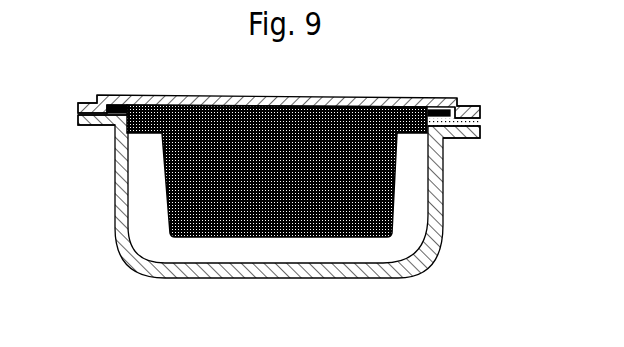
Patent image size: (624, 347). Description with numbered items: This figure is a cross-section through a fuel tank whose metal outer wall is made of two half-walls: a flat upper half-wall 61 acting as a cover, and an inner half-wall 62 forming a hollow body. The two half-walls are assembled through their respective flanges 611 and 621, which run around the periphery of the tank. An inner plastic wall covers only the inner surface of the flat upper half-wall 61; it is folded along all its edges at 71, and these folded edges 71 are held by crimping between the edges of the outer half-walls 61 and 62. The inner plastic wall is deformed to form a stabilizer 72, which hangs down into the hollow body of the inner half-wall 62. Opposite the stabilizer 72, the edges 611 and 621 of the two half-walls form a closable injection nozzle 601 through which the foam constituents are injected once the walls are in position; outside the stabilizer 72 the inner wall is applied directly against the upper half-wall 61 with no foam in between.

The upper half-wall 61 is at (324, 96).
The inner half-wall 62 is at (335, 265).
The closable injection nozzle 601 is at (480, 107).
The flange of the upper half-wall 611 is at (95, 103).
The flange of the inner half-wall 621 is at (97, 125).
The folded edges of the inner wall 71 is at (112, 114).
The stabilizer 72 is at (362, 194).